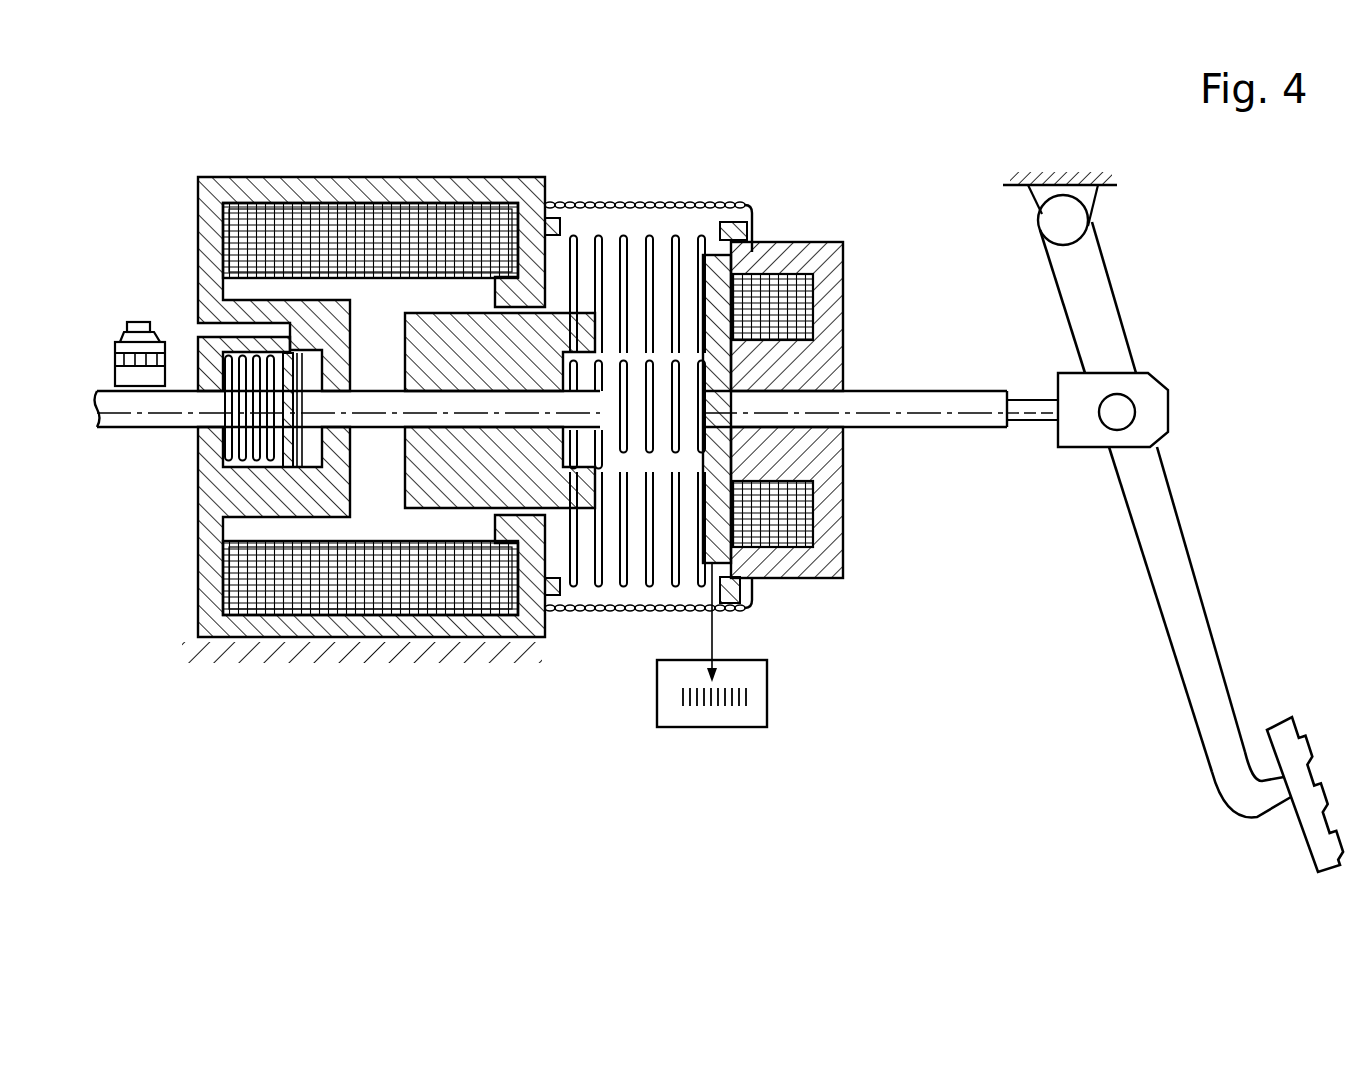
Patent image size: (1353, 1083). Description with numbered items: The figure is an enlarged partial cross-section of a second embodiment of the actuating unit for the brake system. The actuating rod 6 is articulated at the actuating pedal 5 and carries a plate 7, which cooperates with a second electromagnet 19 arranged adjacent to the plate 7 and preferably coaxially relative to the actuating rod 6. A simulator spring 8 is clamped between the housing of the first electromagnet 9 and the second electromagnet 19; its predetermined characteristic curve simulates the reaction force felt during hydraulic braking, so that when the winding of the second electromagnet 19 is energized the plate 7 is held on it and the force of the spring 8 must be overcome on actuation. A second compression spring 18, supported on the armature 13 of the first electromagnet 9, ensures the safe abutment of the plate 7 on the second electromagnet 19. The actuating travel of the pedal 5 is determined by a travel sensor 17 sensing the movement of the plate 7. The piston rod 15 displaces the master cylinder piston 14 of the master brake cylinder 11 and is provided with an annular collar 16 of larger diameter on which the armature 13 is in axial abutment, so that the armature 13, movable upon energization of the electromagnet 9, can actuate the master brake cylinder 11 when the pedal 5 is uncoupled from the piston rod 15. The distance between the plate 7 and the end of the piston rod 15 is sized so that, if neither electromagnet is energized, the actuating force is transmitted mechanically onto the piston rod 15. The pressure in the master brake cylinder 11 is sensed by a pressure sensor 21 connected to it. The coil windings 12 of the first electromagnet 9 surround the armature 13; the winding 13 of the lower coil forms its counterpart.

The actuating pedal 5 is at (1190, 638).
The actuating rod 6 is at (975, 403).
The plate 7 is at (713, 540).
The spring 8 is at (647, 232).
The electromagnet 9 is at (474, 172).
The master brake cylinder 11 is at (237, 440).
The upper coil 12 is at (372, 216).
The armature 13 is at (455, 488).
The master cylinder piston 14 is at (292, 468).
The piston rod 15 is at (444, 405).
The annular collar 16 is at (403, 430).
The travel sensor 17 is at (767, 702).
The second compression spring 18 is at (682, 443).
The second electromagnet 19 is at (818, 362).
The pressure sensor 21 is at (122, 336).